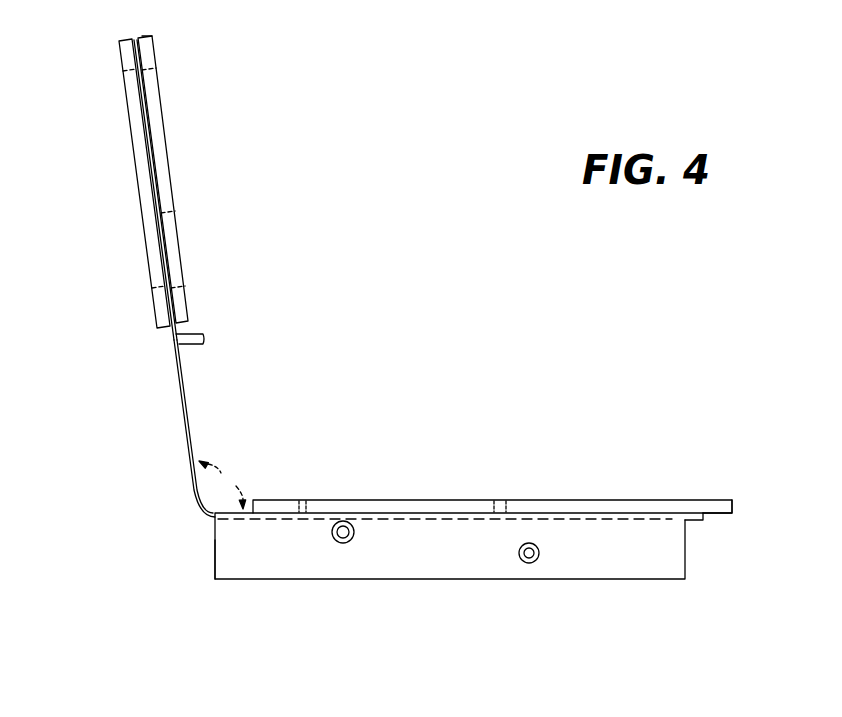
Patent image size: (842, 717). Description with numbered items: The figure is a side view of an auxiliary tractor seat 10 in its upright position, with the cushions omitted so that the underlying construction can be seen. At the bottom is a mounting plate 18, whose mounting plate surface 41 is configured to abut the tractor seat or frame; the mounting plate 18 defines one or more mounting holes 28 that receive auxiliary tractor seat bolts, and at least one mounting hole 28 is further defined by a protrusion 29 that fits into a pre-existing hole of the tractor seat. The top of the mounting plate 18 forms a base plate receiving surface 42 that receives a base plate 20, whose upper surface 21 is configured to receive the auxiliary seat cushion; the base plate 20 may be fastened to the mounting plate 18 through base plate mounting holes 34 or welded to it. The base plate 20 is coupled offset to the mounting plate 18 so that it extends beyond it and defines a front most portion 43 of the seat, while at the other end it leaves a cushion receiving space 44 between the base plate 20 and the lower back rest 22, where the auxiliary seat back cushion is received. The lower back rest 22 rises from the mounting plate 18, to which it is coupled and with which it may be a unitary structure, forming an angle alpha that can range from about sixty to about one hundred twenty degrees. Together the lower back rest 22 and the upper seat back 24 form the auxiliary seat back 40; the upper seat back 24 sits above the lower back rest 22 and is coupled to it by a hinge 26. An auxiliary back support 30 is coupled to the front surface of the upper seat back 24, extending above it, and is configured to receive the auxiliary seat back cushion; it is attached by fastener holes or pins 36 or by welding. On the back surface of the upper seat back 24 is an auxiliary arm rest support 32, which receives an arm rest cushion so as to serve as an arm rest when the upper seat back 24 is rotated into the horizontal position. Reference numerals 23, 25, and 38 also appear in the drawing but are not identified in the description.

The auxiliary tractor seat 10 is at (396, 221).
The mounting plate 18 is at (677, 564).
The base plate 20 is at (734, 507).
The surface 21 is at (546, 497).
The lower back rest 22 is at (185, 420).
The back panel assembly 23 is at (218, 144).
The upper seat back 24 is at (160, 235).
The back portion 25 is at (128, 332).
The hinge 26 is at (214, 338).
The mounting hole 28 is at (340, 543).
The protrusion 29 is at (353, 538).
The auxiliary back support 30 is at (165, 127).
The auxiliary arm rest support 32 is at (131, 133).
The base plate mounting holes 34 is at (303, 490).
The fastener holes or pins 36 is at (186, 209).
The top edge 38 is at (152, 51).
The auxiliary seat back 40 is at (100, 101).
The mounting plate surface 41 is at (260, 570).
The base plate receiving surface 42 is at (668, 516).
The front most portion 43 is at (732, 452).
The cushion receiving space 44 is at (243, 444).